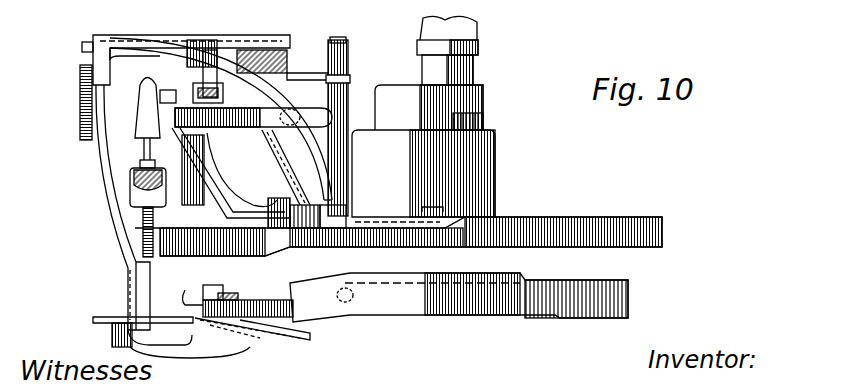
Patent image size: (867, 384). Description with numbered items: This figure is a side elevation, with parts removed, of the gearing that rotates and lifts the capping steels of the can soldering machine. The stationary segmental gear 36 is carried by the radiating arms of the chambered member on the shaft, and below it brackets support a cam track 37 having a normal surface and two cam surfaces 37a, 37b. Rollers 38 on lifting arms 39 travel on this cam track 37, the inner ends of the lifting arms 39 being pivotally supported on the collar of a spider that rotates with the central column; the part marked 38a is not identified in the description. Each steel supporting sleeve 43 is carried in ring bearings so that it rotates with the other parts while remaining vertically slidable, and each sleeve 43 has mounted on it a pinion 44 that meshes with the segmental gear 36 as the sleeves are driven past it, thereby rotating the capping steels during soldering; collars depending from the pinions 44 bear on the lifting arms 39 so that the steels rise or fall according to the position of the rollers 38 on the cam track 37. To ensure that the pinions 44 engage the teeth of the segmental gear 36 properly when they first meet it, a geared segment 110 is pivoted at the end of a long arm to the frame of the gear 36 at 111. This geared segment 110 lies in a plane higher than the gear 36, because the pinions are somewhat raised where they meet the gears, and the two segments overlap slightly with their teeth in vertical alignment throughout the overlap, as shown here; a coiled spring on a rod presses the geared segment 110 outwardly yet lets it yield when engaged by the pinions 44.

The segmental gear 36 is at (207, 228).
The cam track 37 is at (405, 307).
The cam surface 37a is at (477, 282).
The cam surface 37b is at (540, 273).
The roller 38 is at (212, 286).
The knob 38a is at (147, 147).
The lifting arm 39 is at (240, 352).
The steel supporting sleeve 43 is at (143, 213).
The pinion 44 is at (140, 238).
The geared segment 110 is at (298, 243).
The pivot 111 is at (430, 212).